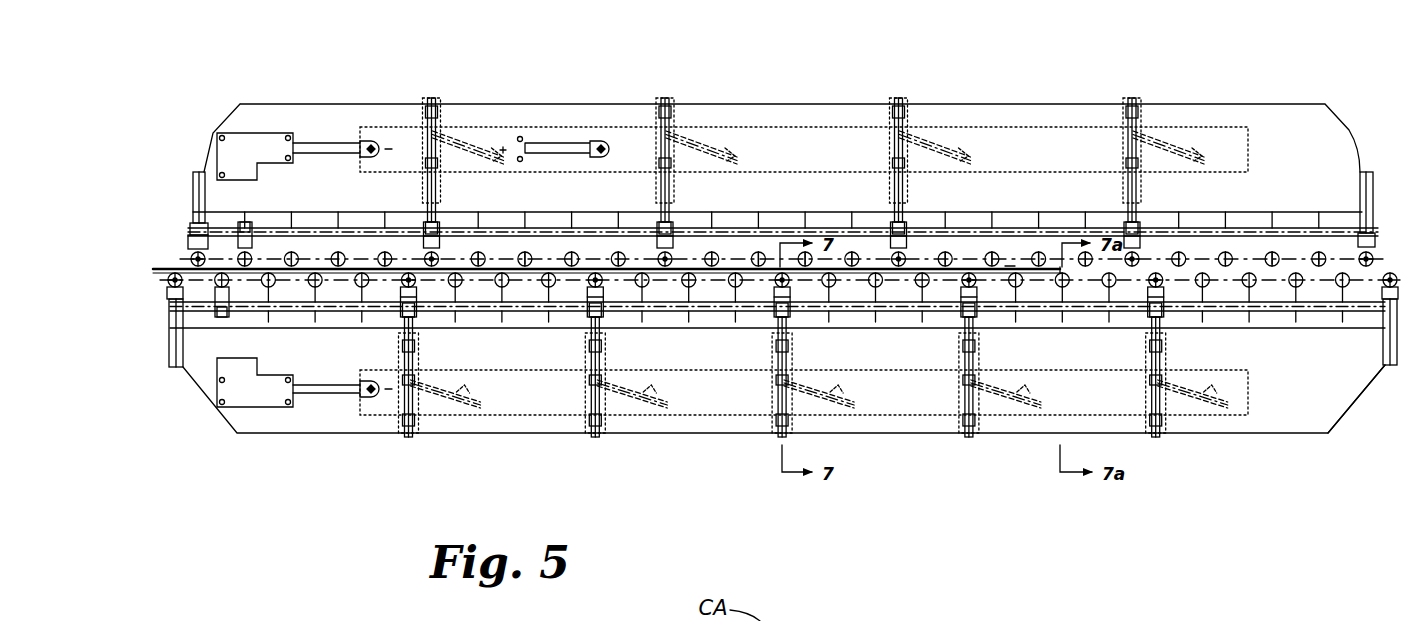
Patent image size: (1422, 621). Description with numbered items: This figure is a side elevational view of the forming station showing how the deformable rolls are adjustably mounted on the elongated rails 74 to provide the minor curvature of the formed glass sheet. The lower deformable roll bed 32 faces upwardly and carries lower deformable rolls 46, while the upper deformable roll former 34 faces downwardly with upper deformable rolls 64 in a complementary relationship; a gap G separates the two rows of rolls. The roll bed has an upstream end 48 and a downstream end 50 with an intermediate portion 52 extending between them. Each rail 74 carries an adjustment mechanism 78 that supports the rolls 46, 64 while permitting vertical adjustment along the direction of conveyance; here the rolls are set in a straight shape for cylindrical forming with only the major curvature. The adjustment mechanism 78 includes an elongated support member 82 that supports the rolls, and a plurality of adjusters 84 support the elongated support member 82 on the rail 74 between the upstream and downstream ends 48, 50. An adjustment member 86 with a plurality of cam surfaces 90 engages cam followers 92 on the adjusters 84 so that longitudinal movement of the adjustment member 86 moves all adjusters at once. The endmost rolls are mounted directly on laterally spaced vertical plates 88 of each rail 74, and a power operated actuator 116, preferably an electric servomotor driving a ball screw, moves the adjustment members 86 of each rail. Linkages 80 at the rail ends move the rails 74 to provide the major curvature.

The lower deformable roll bed 32 is at (1259, 292).
The upper deformable roll former 34 is at (1290, 250).
The lower deformable rolls 46 is at (268, 287).
The upstream end 48 is at (177, 408).
The downstream end 50 is at (1386, 408).
The intermediate portion 52 is at (718, 395).
The upper deformable rolls 64 is at (524, 252).
The elongated rails 74 is at (776, 100).
The adjustment mechanism 78 is at (1000, 86).
The linkages 80 is at (1322, 507).
The elongated support member 82 is at (745, 228).
The adjusters 84 is at (421, 197).
The adjustment member 86 is at (736, 128).
The vertical plates 88 is at (1060, 115).
The cam surfaces 90 is at (460, 405).
The cam followers 92 is at (400, 395).
The power operated actuator 116 is at (246, 140).
The gap G is at (1010, 266).